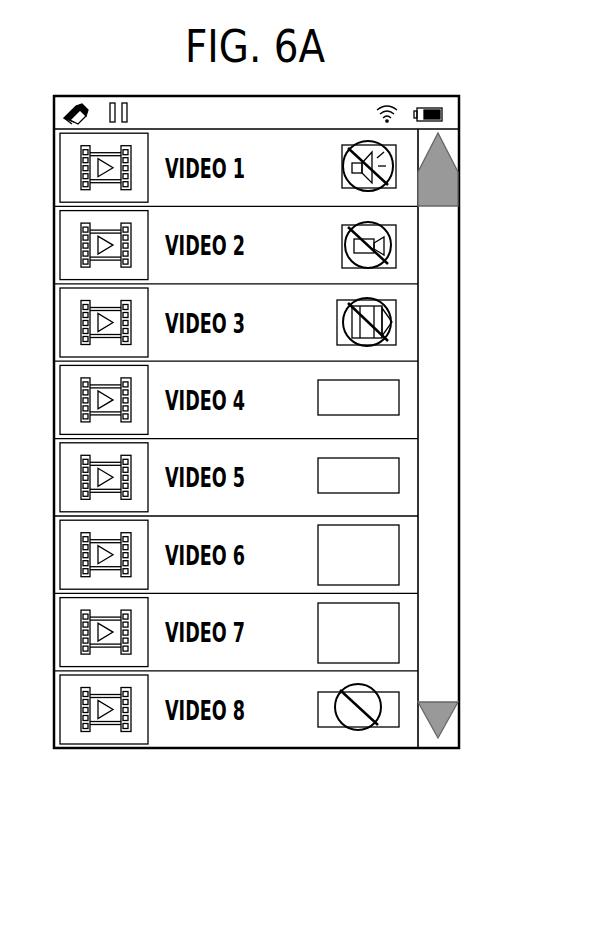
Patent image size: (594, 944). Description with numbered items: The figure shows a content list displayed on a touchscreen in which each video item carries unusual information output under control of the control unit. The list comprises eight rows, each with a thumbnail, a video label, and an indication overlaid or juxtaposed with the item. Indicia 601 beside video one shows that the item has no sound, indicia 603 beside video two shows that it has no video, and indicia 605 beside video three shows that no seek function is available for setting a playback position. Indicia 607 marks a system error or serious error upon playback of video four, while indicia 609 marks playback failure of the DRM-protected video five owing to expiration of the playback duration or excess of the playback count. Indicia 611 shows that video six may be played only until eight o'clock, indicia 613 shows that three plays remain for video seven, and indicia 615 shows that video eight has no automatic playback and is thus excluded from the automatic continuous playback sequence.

The indicia 601 is at (407, 176).
The indicia 603 is at (407, 250).
The indicia 605 is at (407, 325).
The indicia 607 is at (407, 400).
The indicia 609 is at (407, 480).
The indicia 611 is at (407, 555).
The indicia 613 is at (407, 650).
The indicia 615 is at (407, 695).